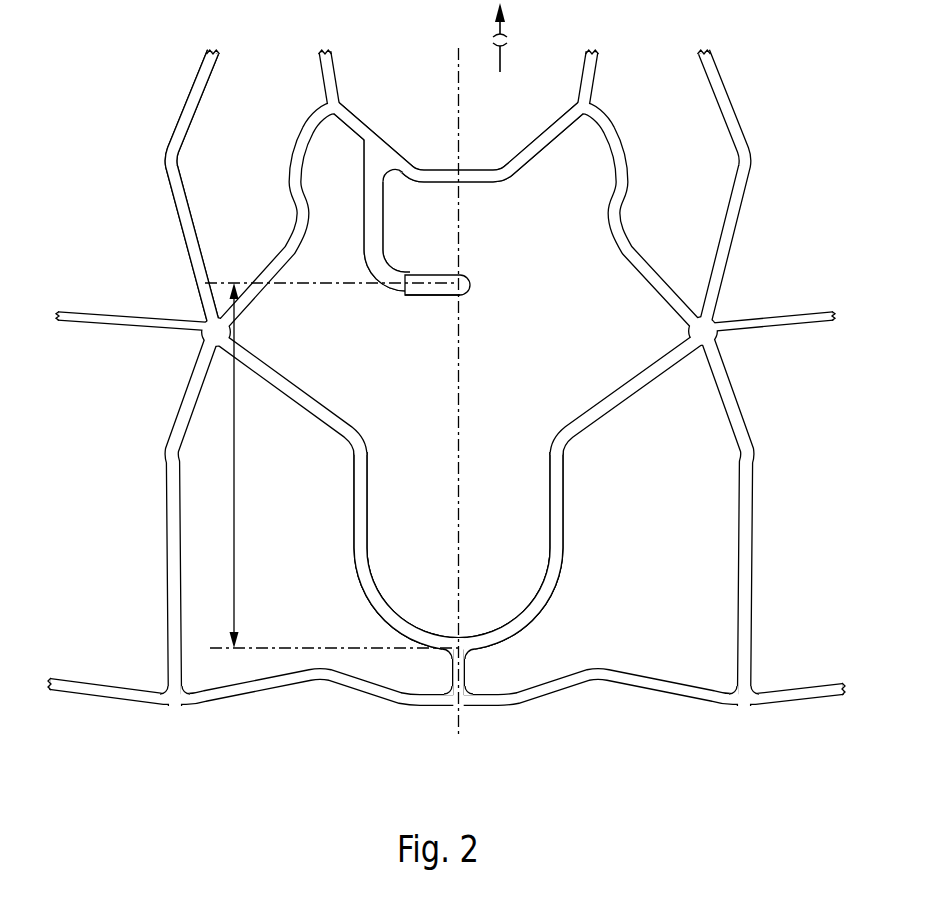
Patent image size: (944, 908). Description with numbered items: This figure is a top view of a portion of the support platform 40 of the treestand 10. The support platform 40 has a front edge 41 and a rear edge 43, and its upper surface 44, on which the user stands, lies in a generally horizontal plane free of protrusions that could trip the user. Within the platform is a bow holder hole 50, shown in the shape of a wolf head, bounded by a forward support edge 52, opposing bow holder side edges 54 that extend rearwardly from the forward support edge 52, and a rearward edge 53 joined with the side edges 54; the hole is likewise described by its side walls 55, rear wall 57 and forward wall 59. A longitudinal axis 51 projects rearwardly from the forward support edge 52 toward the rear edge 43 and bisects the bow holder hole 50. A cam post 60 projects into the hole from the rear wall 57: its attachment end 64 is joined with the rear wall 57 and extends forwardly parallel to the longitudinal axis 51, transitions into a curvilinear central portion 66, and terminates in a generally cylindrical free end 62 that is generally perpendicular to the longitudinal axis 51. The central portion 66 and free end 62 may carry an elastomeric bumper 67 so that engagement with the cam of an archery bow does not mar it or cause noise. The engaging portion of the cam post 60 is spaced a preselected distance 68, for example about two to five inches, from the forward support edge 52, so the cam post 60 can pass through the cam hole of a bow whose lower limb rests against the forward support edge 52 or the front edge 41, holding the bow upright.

The stent 10 is at (118, 157).
The support platform 40 is at (763, 202).
The front edge 41 is at (566, 690).
The rear edge 43 is at (502, 49).
The upper surface 44 is at (690, 322).
The bow holder hole 50 is at (532, 381).
The longitudinal axis 51 is at (458, 525).
The forward support edge 52 is at (392, 630).
The rearward edge 53 is at (492, 183).
The bow holder side edges 54 is at (550, 478).
The side walls 55 is at (250, 302).
The rear wall 57 is at (415, 182).
The forward wall 59 is at (410, 628).
The cam post 60 is at (393, 313).
The free end 62 is at (472, 281).
The attachment end 64 is at (378, 171).
The central portion 66 is at (393, 281).
The bumper 67 is at (437, 297).
The preselected distance 68 is at (235, 465).